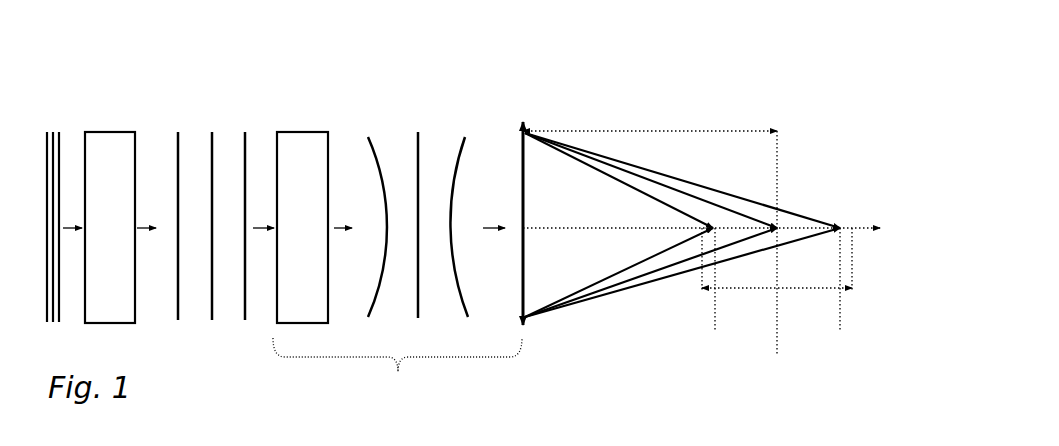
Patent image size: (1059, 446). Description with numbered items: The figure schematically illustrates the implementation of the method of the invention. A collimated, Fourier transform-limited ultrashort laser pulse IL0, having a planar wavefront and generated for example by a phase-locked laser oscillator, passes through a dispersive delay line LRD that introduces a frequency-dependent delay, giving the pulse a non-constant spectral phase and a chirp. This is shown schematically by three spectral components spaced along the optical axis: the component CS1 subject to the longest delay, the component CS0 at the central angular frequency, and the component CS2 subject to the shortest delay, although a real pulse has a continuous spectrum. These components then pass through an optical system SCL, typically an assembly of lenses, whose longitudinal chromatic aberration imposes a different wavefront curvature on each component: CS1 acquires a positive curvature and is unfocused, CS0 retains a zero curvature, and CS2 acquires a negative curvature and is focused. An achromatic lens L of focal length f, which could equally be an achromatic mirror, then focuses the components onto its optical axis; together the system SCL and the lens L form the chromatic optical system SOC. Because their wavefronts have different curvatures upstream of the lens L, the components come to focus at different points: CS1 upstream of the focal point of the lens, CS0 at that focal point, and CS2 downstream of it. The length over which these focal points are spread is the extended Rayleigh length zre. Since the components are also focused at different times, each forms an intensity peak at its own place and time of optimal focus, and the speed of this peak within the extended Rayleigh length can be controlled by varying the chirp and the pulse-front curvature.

The laser pulse IL0 is at (52, 128).
The dispersive delay line LRD is at (113, 130).
The spectral component CS1 is at (178, 130).
The spectral component CS0 is at (212, 130).
The spectral component CS2 is at (245, 130).
The optical system having longitudinal chromatic aberration SCL is at (307, 130).
The chromatic optical system SOC is at (397, 370).
The achromatic lens L is at (529, 117).
The focal length f is at (640, 130).
The extended Rayleigh length zre is at (777, 274).